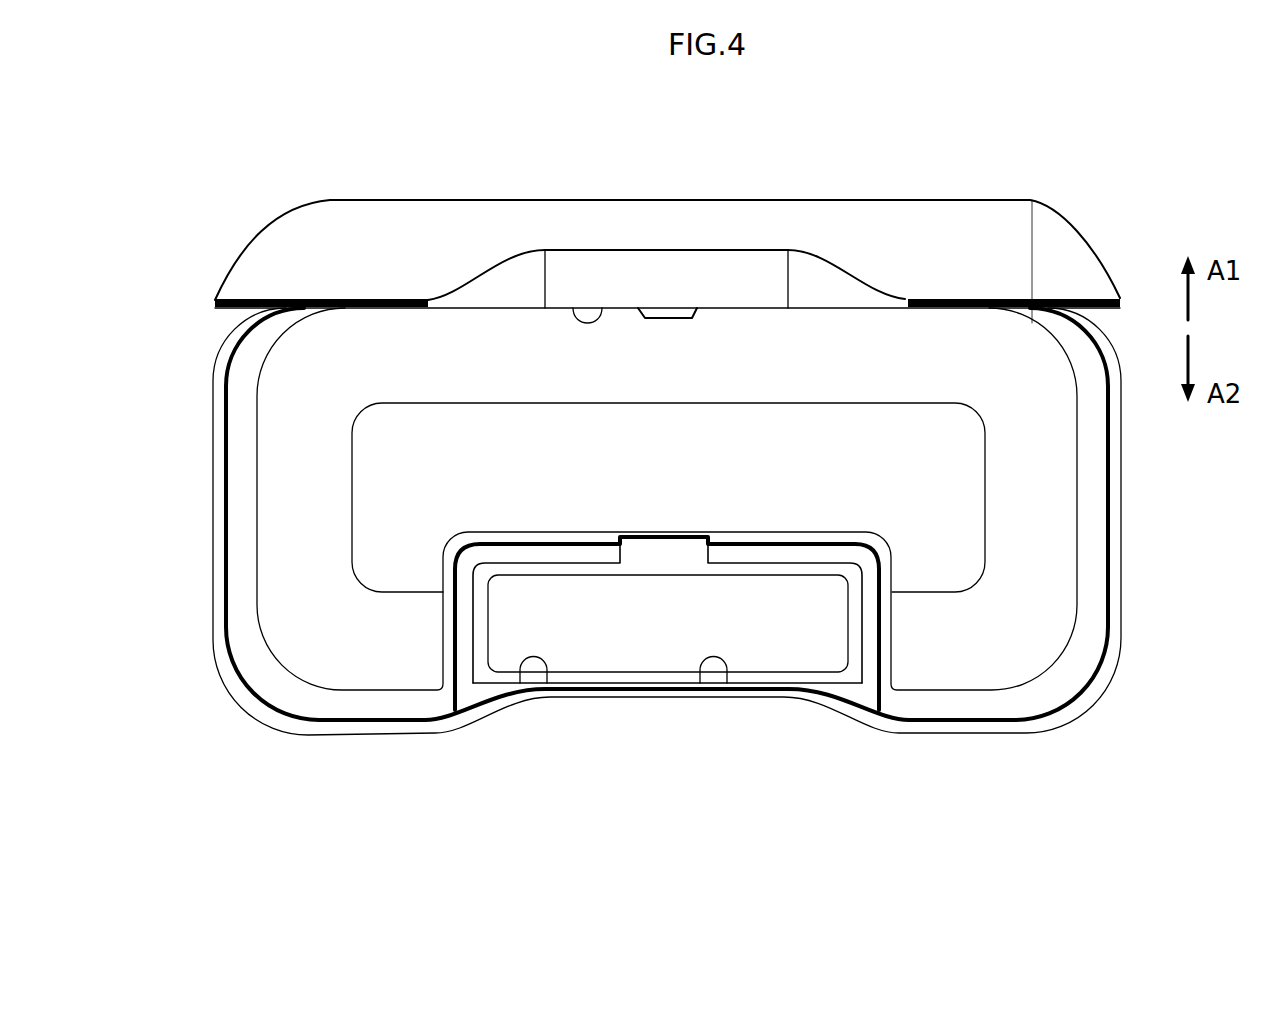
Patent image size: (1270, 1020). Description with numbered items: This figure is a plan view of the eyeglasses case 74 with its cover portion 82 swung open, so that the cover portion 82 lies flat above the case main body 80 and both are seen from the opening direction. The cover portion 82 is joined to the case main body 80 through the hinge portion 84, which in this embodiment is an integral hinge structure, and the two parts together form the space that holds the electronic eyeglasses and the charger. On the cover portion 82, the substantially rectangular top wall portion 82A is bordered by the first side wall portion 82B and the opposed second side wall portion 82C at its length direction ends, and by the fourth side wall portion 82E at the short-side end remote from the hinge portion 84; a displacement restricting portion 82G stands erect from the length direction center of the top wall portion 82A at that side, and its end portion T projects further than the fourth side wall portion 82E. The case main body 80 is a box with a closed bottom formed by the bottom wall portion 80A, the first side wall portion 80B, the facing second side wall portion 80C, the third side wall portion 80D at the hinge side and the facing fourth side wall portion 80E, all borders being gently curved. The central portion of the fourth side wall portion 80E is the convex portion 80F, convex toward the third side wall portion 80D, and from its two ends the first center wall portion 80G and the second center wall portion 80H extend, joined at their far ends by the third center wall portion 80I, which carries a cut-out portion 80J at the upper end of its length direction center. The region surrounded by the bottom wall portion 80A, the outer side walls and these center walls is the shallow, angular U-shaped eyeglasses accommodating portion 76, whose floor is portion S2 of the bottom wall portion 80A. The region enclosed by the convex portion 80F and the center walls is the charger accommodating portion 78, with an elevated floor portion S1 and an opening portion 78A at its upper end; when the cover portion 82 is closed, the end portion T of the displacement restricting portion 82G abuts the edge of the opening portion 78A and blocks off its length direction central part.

The eyeglasses case 74 is at (964, 156).
The cover portion 82 is at (271, 214).
The top wall portion 82A is at (483, 197).
The first side wall portion 82B is at (222, 290).
The second side wall portion 82C is at (1095, 262).
The fourth side wall portion 82E is at (380, 283).
The displacement restricting portion 82G is at (670, 318).
The hinge portion 84 is at (602, 310).
The case main body 80 is at (1092, 700).
The bottom wall portion 80A is at (950, 505).
The first side wall portion 80B is at (212, 520).
The second side wall portion 80C is at (1123, 596).
The third side wall portion 80D is at (422, 322).
The fourth side wall portion 80E is at (345, 735).
The convex portion 80F is at (722, 683).
The first center wall portion 80G is at (455, 620).
The second center wall portion 80H is at (882, 625).
The third center wall portion 80I is at (505, 532).
The cut-out portion 80J is at (633, 573).
The eyeglasses accommodating portion 76 is at (717, 490).
The charger accommodating portion 78 is at (708, 622).
The opening portion 78A is at (547, 683).